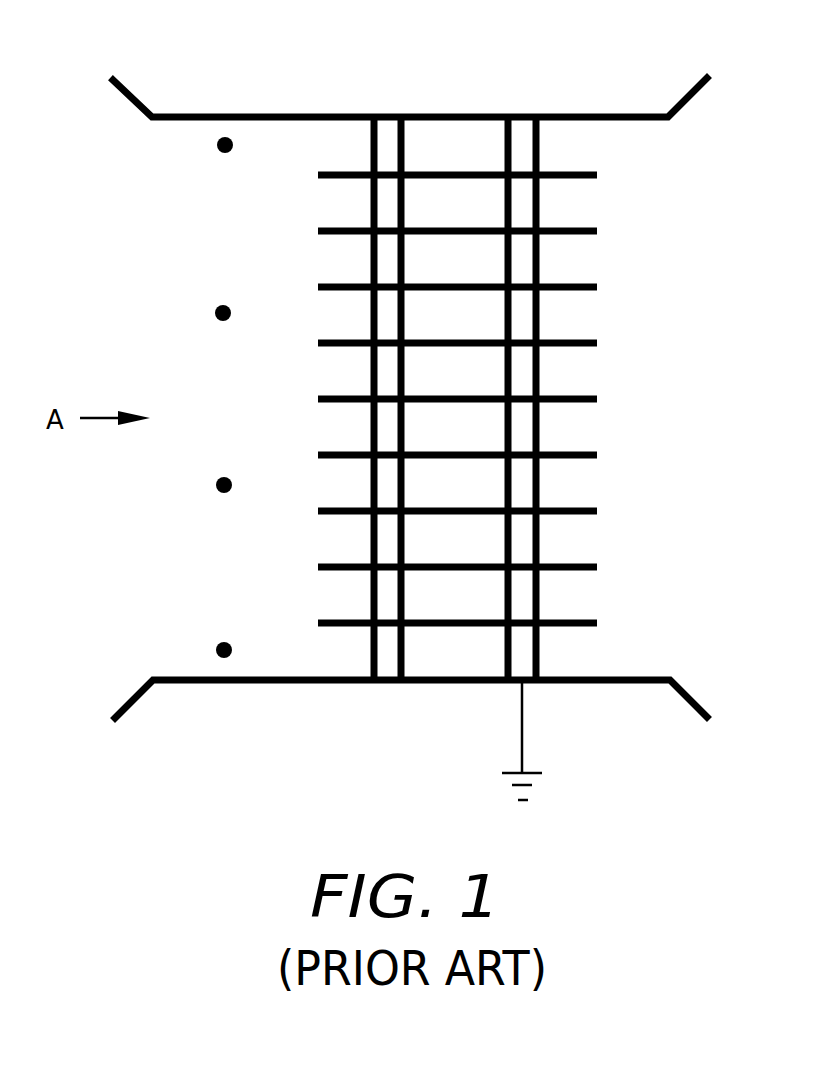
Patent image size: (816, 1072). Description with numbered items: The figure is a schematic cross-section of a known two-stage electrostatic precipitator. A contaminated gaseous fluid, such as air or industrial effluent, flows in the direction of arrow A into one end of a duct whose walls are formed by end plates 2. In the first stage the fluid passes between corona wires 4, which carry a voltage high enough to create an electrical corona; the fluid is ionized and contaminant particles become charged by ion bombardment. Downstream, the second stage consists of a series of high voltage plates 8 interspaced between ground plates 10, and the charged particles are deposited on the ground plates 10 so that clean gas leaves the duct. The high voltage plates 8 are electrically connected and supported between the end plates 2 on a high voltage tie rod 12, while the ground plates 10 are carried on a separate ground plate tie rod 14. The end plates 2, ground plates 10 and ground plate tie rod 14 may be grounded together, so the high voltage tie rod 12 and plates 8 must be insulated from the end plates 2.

The end plates 2 is at (631, 115).
The corona wires 4 is at (218, 153).
The high voltage plates 8 is at (583, 179).
The ground plates 10 is at (581, 347).
The high voltage tie rod 12 is at (387, 152).
The ground plate tie rod 14 is at (522, 152).